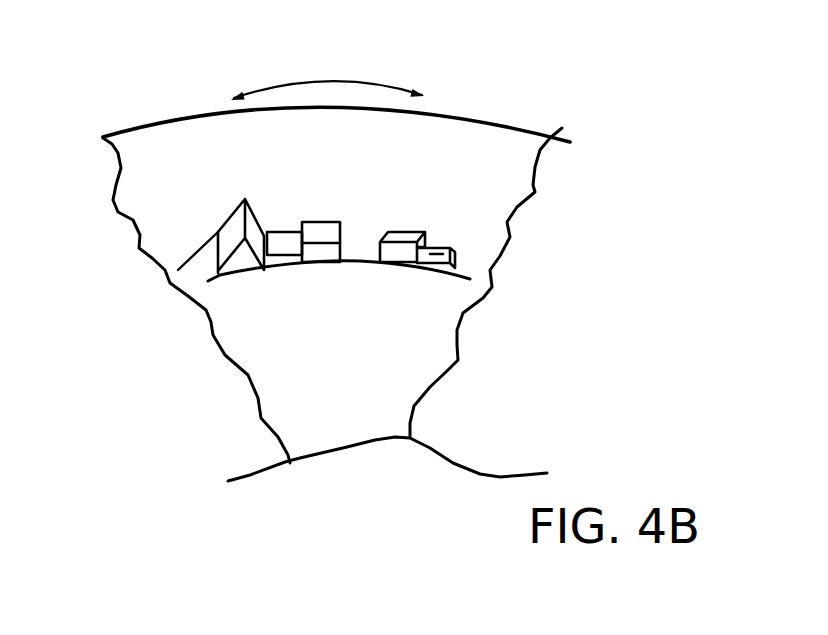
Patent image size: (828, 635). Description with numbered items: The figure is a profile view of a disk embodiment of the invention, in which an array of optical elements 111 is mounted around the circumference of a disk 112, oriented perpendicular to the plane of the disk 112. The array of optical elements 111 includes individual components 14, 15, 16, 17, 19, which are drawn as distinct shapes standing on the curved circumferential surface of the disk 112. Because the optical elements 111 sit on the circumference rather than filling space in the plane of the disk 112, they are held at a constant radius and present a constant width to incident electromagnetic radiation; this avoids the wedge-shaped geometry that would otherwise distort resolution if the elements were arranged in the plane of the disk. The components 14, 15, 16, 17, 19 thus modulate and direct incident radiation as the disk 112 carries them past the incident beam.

The building 14 is at (403, 240).
The small structure 15 is at (452, 244).
The building 16 is at (280, 240).
The building 17 is at (313, 233).
The terrain region 19 is at (211, 306).
The viewing direction 111 is at (438, 167).
The field of view span 112 is at (232, 183).